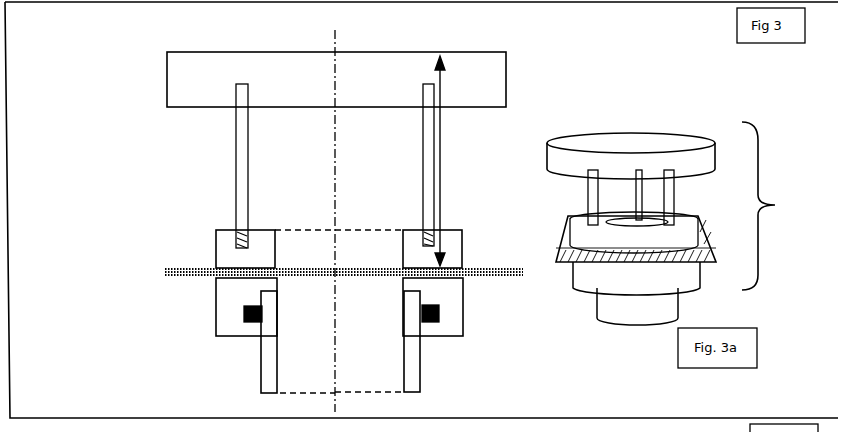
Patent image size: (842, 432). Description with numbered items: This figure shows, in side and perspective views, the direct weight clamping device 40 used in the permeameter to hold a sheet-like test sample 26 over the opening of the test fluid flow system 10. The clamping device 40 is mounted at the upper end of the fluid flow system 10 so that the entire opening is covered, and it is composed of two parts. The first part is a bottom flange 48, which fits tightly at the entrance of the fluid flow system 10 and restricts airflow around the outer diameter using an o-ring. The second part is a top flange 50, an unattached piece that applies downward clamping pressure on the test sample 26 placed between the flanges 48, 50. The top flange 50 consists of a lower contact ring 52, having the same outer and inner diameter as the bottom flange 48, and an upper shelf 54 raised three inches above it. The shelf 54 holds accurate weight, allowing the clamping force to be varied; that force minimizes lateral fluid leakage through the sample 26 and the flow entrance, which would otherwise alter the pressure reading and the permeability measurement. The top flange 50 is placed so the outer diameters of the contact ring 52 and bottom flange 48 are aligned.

In FIG. 3, the test fluid flow system 10 is at (268, 382).
In FIG. 3, the test sample 26 is at (170, 272).
In FIG. 3A, the test sample 26 is at (568, 247).
In FIG. 3A, the clamping device 40 is at (673, 223).
In FIG. 3, the bottom flange 48 is at (223, 318).
In FIG. 3, the top flange 50 is at (444, 163).
In FIG. 3, the lower contact ring 52 is at (226, 242).
In FIG. 3, the upper shelf 54 is at (211, 90).